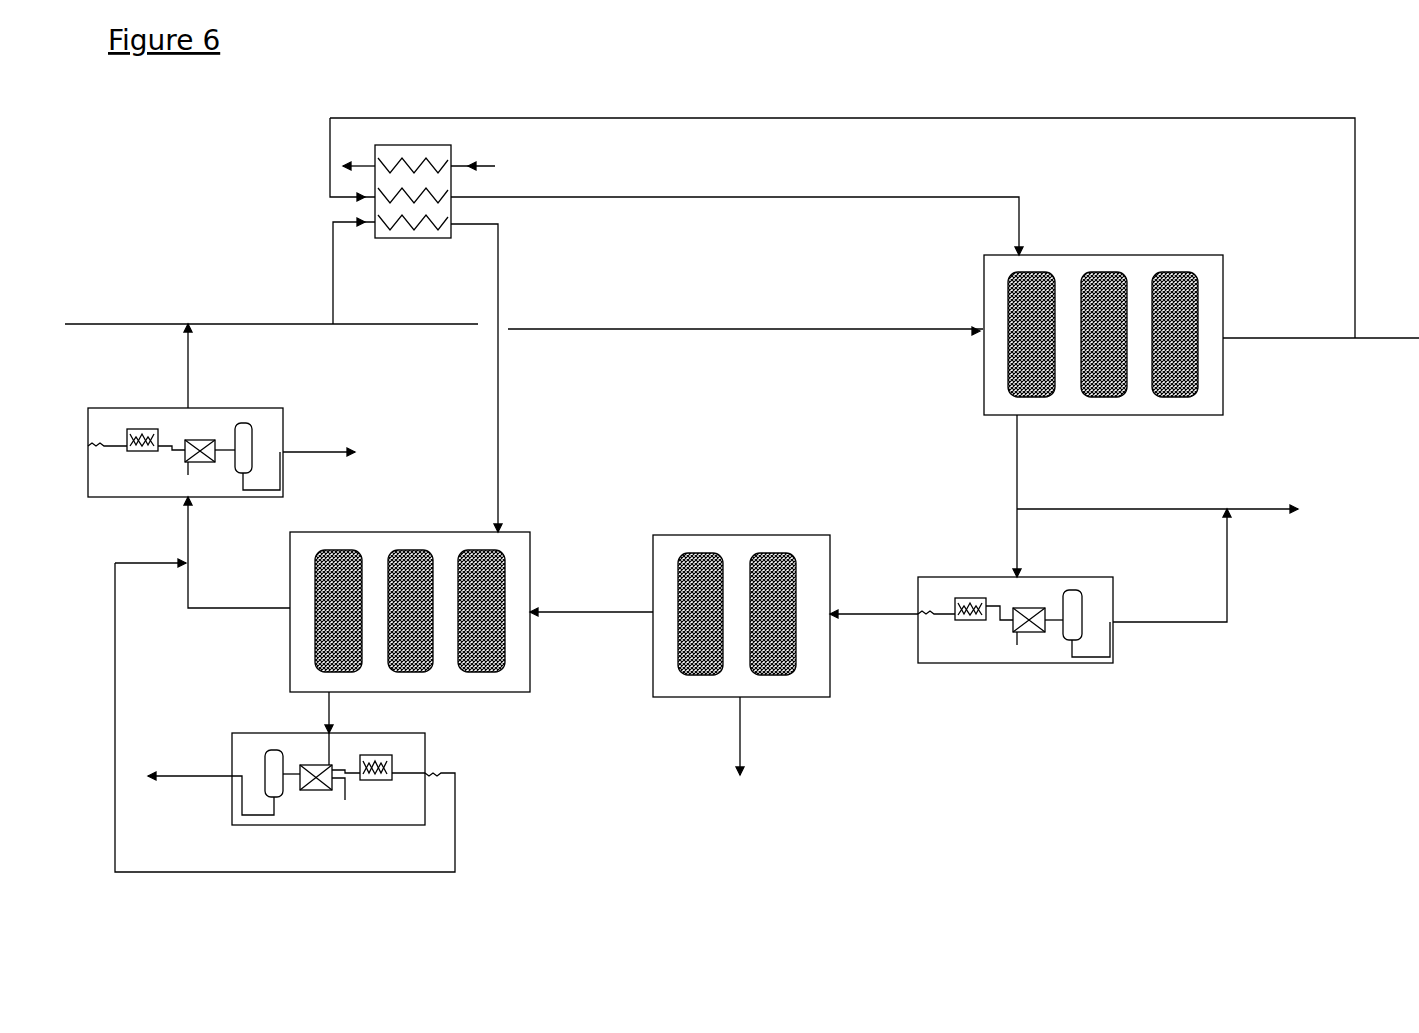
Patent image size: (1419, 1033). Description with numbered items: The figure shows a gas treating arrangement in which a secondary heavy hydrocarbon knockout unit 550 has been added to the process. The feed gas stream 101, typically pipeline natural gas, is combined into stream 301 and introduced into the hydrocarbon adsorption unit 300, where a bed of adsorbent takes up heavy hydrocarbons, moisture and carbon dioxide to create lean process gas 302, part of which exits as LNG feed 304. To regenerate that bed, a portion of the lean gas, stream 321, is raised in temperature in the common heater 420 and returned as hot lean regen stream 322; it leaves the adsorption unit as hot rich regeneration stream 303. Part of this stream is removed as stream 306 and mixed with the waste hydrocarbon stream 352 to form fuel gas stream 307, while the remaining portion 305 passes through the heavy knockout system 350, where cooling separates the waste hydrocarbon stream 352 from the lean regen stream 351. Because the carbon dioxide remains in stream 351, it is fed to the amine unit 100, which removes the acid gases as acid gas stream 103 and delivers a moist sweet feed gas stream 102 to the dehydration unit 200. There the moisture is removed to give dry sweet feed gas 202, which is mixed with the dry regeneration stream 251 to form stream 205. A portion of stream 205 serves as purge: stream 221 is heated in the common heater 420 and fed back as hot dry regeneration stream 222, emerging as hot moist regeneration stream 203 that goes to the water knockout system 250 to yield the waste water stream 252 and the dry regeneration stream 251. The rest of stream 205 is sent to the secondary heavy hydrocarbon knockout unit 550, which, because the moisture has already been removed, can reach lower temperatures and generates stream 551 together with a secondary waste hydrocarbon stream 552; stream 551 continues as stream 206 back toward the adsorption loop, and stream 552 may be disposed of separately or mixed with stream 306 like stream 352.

The amine unit 100 is at (741, 616).
The feed gas stream 101 is at (126, 309).
The moist sweet feed gas stream 102 is at (591, 603).
The acid gas stream 103 is at (724, 736).
The dehydration unit 200 is at (410, 612).
The dry sweet feed gas 202 is at (237, 552).
The hot moist regeneration stream 203 is at (347, 712).
The mixed stream 205 is at (150, 543).
The stream 206 is at (333, 341).
The regeneration portion stream 221 is at (335, 271).
The hot dry regeneration stream 222 is at (476, 378).
The water knockout system 250 is at (328, 779).
The dry regeneration stream 251 is at (309, 717).
The waste water stream 252 is at (190, 789).
The hydrocarbon adsorption unit 300 is at (1103, 335).
The feed stream to adsorption unit 301 is at (745, 318).
The lean process gas 302 is at (1289, 323).
The hot rich regeneration stream 303 is at (992, 462).
The LNG feed 304 is at (1387, 325).
The regeneration stream portion 305 is at (993, 543).
The removed regeneration stream portion 306 is at (1122, 494).
The fuel gas stream 307 is at (1262, 496).
The lean regeneration portion stream 321 is at (842, 228).
The hot lean regen stream 322 is at (737, 208).
The heavy knockout system 350 is at (1041, 620).
The lean regen stream 351 is at (874, 629).
The waste hydrocarbon stream 352 is at (1172, 585).
The common heater 420 is at (413, 181).
The secondary heavy hydrocarbon knockout unit 550 is at (185, 452).
The secondary knockout outlet stream 551 is at (172, 366).
The secondary waste hydrocarbon stream 552 is at (319, 467).